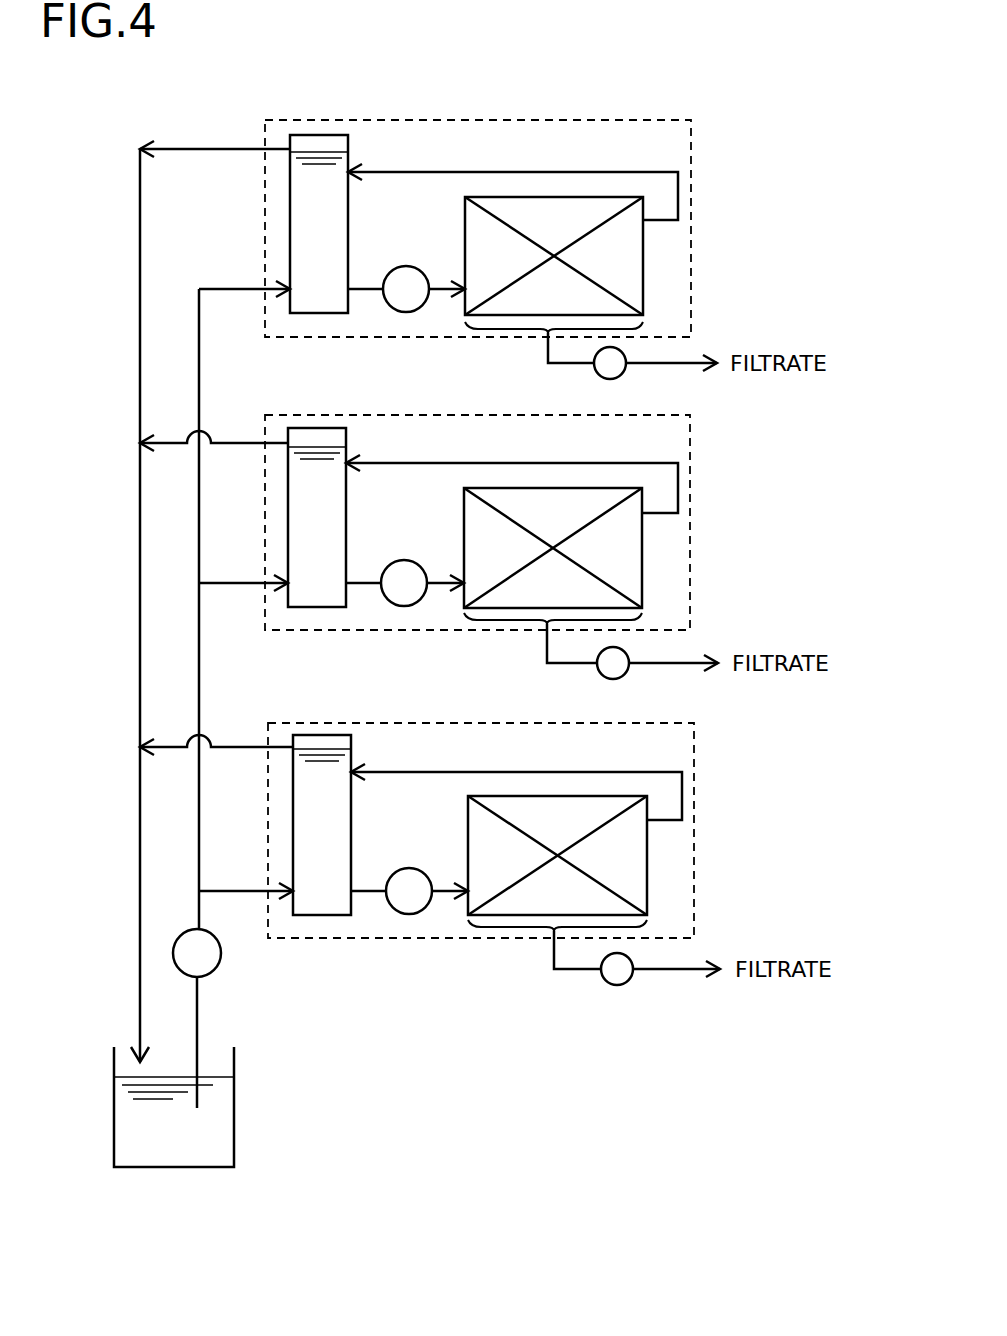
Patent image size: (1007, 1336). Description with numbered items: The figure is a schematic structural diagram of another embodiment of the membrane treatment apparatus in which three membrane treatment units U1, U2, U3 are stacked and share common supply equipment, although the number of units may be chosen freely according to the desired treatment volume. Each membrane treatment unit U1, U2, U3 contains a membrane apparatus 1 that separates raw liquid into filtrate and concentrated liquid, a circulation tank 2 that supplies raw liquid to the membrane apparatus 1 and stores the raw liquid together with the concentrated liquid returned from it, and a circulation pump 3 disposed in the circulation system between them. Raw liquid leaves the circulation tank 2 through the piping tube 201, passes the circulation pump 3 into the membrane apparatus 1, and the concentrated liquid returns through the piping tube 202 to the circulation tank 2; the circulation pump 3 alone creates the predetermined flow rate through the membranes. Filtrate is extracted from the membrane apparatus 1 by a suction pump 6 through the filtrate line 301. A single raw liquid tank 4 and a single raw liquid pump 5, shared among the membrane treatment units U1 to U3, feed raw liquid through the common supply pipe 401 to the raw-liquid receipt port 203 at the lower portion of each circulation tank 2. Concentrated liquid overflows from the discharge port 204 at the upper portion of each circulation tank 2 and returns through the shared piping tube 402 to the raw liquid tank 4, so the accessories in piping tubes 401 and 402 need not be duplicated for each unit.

The membrane apparatus 1 is at (643, 268).
The circulation tank 2 is at (328, 234).
The circulation pump 3 is at (415, 267).
The raw liquid tank 4 is at (234, 1112).
The raw liquid pump 5 is at (221, 950).
The suction pump 6 is at (599, 375).
The piping tube 201 is at (365, 289).
The piping tube 202 is at (438, 160).
The raw-liquid receipt port 203 is at (286, 285).
The discharge port 204 is at (288, 142).
The filtrate pipe 301 is at (548, 340).
The supply pipe 401 is at (199, 555).
The piping tube 402 is at (140, 420).
The membrane treatment unit U1 is at (712, 138).
The membrane treatment unit U2 is at (710, 468).
The membrane treatment unit U3 is at (720, 778).